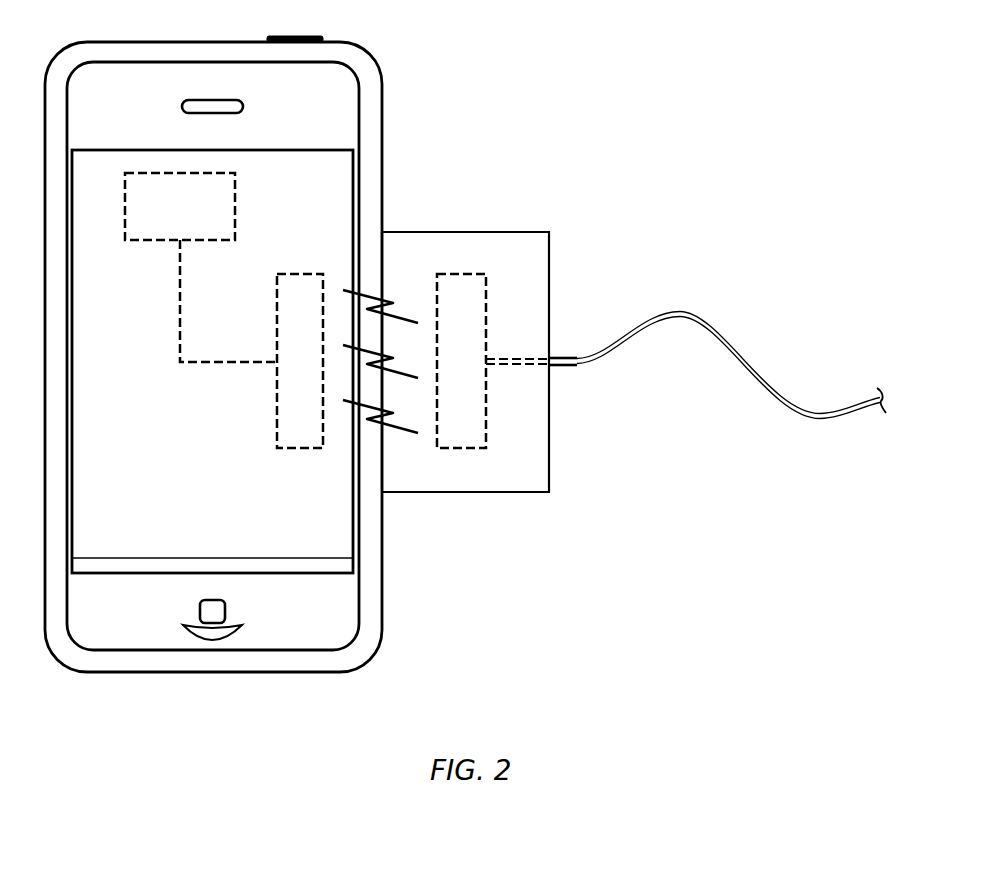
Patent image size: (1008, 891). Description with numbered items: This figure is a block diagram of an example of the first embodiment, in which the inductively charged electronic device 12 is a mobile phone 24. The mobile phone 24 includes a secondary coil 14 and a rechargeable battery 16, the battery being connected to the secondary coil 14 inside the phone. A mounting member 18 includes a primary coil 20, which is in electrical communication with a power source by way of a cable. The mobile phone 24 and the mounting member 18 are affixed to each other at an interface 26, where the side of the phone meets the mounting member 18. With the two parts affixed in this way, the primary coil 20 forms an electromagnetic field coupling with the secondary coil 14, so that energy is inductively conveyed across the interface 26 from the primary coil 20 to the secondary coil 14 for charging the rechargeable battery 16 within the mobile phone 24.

The inductively charged electronic device 12 is at (368, 56).
The mobile phone 24 is at (90, 45).
The rechargeable battery 16 is at (237, 193).
The secondary coil 14 is at (277, 408).
The mounting member 18 is at (510, 242).
The interface 26 is at (383, 230).
The primary coil 20 is at (480, 421).